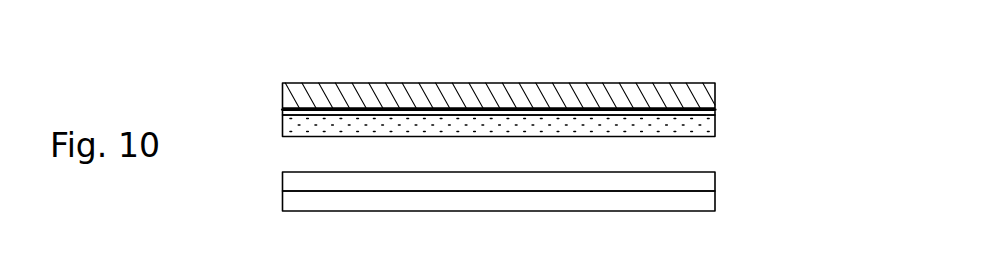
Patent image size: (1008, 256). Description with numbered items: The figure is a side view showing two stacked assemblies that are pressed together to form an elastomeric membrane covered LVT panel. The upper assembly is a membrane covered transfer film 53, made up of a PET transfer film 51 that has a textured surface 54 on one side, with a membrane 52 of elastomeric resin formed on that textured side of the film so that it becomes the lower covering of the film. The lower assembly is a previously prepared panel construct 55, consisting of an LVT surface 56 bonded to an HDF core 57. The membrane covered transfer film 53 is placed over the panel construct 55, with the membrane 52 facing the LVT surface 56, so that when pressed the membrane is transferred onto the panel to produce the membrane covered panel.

The PET transfer film 51 is at (715, 97).
The membrane 52 is at (715, 126).
The membrane covered transfer film 53 is at (270, 83).
The textured surface 54 is at (498, 113).
The panel construct 55 is at (272, 172).
The LVT surface 56 is at (715, 180).
The HDF core 57 is at (715, 200).